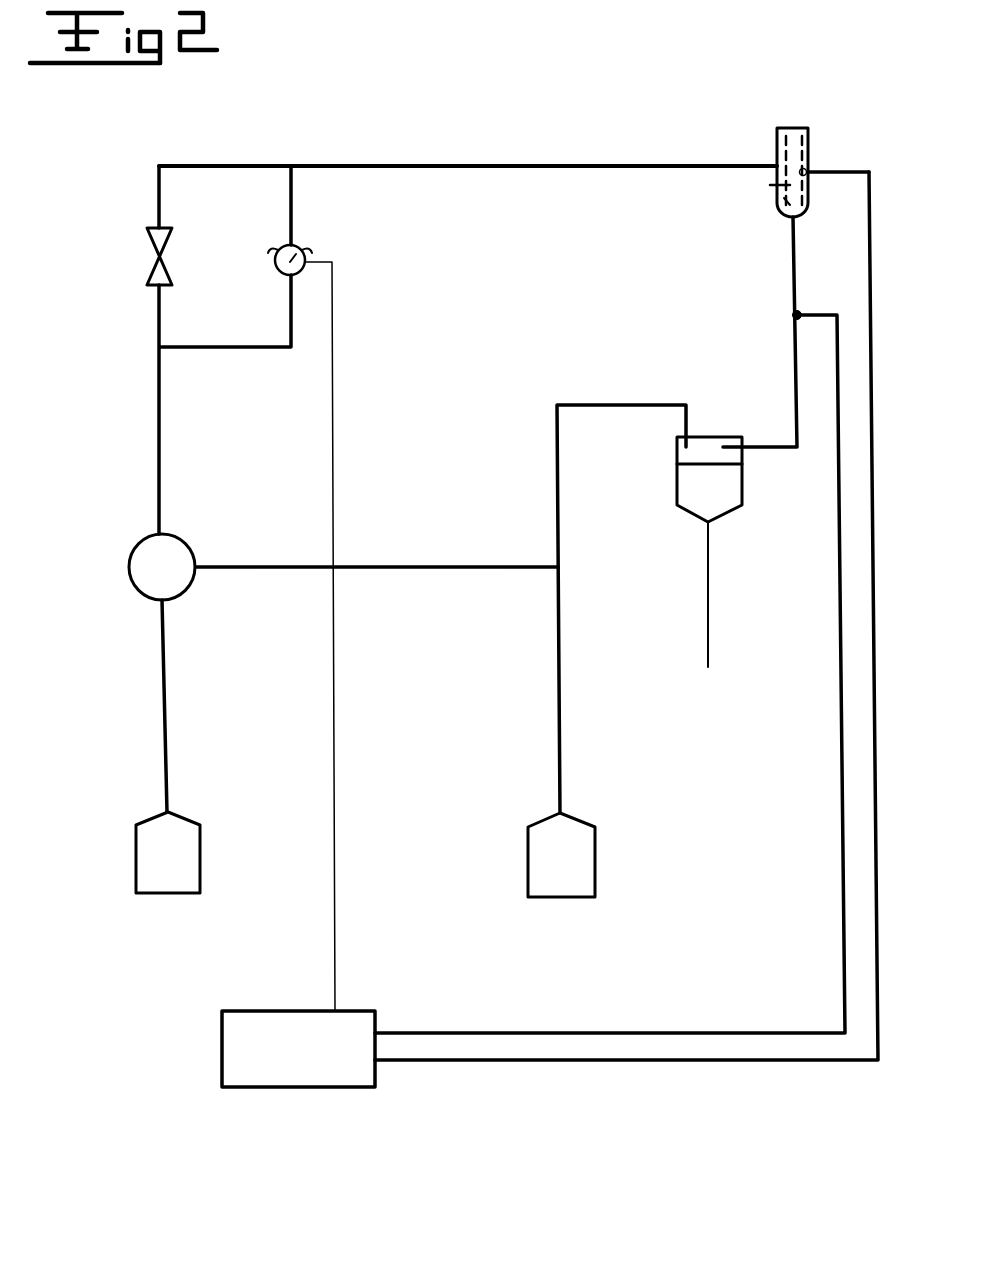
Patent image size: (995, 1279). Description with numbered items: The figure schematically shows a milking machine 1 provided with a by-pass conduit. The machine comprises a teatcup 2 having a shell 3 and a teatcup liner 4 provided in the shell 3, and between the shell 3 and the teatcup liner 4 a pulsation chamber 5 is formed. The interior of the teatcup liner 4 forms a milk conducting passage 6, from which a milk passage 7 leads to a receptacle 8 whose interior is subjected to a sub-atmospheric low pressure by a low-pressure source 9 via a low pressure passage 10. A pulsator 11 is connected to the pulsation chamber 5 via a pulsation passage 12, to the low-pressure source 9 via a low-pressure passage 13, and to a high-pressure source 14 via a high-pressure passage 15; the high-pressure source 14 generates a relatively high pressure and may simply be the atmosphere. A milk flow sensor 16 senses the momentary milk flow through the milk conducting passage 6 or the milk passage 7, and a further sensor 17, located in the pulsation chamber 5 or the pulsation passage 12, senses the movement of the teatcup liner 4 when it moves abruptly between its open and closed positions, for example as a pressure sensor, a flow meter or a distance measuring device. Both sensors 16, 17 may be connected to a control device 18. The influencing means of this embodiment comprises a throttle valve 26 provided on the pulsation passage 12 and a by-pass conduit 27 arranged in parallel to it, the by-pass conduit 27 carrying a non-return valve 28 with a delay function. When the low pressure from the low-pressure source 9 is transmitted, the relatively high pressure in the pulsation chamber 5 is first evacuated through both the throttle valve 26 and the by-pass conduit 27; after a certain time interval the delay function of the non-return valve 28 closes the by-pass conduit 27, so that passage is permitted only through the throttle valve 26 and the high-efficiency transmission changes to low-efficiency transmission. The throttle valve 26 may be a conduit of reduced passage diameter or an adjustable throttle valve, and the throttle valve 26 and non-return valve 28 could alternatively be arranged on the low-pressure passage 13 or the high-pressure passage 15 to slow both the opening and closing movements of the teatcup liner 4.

The milking machine 1 is at (493, 128).
The teatcup 2 is at (790, 128).
The shell 3 is at (808, 140).
The teatcup liner 4 is at (770, 185).
The pulsation chamber 5 is at (778, 145).
The milk conducting passage 6 is at (786, 202).
The milk passage 7 is at (797, 376).
The receptacle 8 is at (712, 500).
The low-pressure source 9 is at (578, 843).
The low pressure passage 10 is at (558, 502).
The pulsator 11 is at (173, 556).
The pulsation passage 12 is at (529, 166).
The low-pressure passage 13 is at (490, 567).
The high-pressure source 14 is at (150, 863).
The high-pressure passage 15 is at (166, 702).
The milk flow sensor 16 is at (797, 315).
The sensor 17 is at (808, 171).
The control device 18 is at (352, 1075).
The throttle valve 26 is at (158, 245).
The by-pass conduit 27 is at (291, 196).
The non-return valve 28 is at (300, 250).